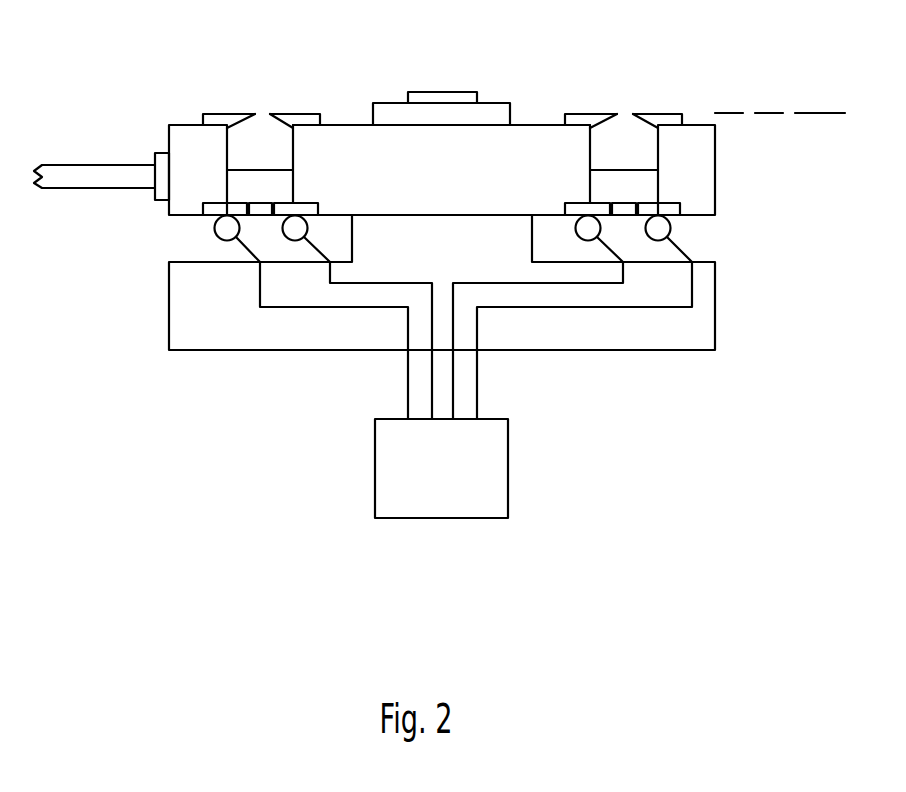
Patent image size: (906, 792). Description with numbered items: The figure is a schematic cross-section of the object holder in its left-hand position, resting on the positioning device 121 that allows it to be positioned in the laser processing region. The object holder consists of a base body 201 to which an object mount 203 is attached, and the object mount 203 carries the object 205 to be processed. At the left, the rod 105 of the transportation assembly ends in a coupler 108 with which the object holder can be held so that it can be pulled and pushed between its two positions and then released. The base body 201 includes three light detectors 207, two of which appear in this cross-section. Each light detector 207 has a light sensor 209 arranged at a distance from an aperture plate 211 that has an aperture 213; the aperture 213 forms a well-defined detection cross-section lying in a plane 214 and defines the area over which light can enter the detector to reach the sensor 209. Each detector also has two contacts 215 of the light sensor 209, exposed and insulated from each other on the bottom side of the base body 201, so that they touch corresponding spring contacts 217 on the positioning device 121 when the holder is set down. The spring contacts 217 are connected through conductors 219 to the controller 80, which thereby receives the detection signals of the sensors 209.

The controller 80 is at (508, 468).
The rod 105 is at (72, 165).
The coupler 108 is at (157, 153).
The positioning device 121 is at (716, 332).
The base body 201 is at (716, 170).
The object mount 203 is at (494, 103).
The object 205 is at (433, 92).
The light detector 207 is at (285, 91).
The light sensor 209 is at (260, 168).
The aperture plate 211 is at (215, 113).
The aperture 213 is at (253, 114).
The plane 214 is at (818, 113).
The contacts 215 is at (214, 228).
The spring contacts 217 is at (227, 228).
The conductors 219 is at (432, 365).